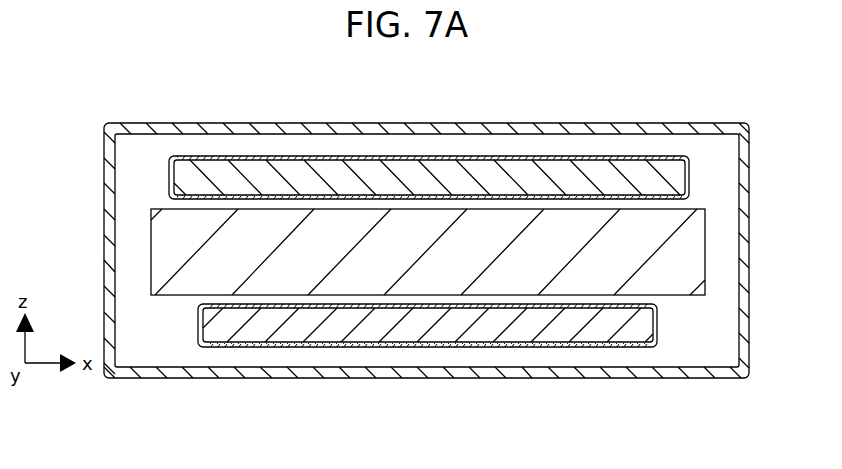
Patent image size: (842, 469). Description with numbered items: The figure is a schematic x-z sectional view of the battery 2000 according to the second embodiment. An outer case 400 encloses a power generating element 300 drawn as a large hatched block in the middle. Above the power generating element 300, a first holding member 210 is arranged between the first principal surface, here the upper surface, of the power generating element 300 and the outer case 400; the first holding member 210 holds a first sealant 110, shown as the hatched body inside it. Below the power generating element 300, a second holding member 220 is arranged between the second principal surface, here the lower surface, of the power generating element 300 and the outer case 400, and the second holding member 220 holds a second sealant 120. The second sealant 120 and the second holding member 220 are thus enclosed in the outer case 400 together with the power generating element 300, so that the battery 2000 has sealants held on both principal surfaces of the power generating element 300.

The battery 2000 is at (435, 85).
The outer case 400 is at (723, 130).
The power generating element 300 is at (340, 222).
The first holding member 210 is at (196, 156).
The first sealant 110 is at (258, 182).
The second holding member 220 is at (553, 345).
The second sealant 120 is at (483, 333).